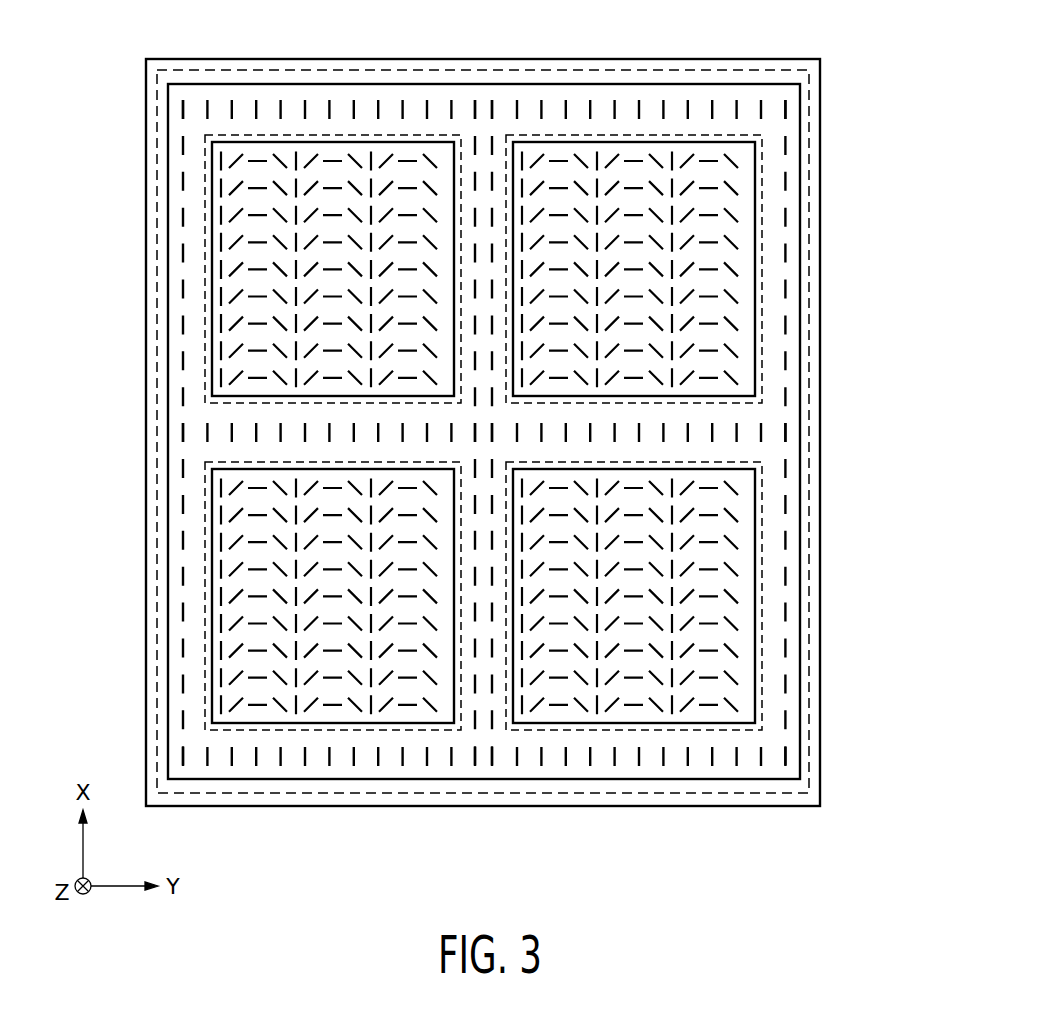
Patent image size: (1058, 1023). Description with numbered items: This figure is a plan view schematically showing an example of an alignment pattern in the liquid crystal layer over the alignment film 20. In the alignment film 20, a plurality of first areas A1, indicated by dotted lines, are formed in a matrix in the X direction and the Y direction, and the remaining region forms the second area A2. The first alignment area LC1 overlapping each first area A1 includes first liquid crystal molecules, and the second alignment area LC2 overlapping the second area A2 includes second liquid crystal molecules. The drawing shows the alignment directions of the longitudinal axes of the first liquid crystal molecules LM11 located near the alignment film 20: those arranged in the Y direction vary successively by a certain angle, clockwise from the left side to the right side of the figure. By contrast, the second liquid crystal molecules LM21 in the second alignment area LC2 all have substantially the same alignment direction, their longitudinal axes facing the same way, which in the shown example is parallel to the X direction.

The alignment film 20 is at (820, 170).
The first area A1 is at (695, 732).
The second area A2 is at (811, 432).
The first alignment area LC1 is at (756, 590).
The second alignment area LC2 is at (800, 700).
The first liquid crystal molecules LM11 is at (282, 710).
The second liquid crystal molecules LM21 is at (183, 433).